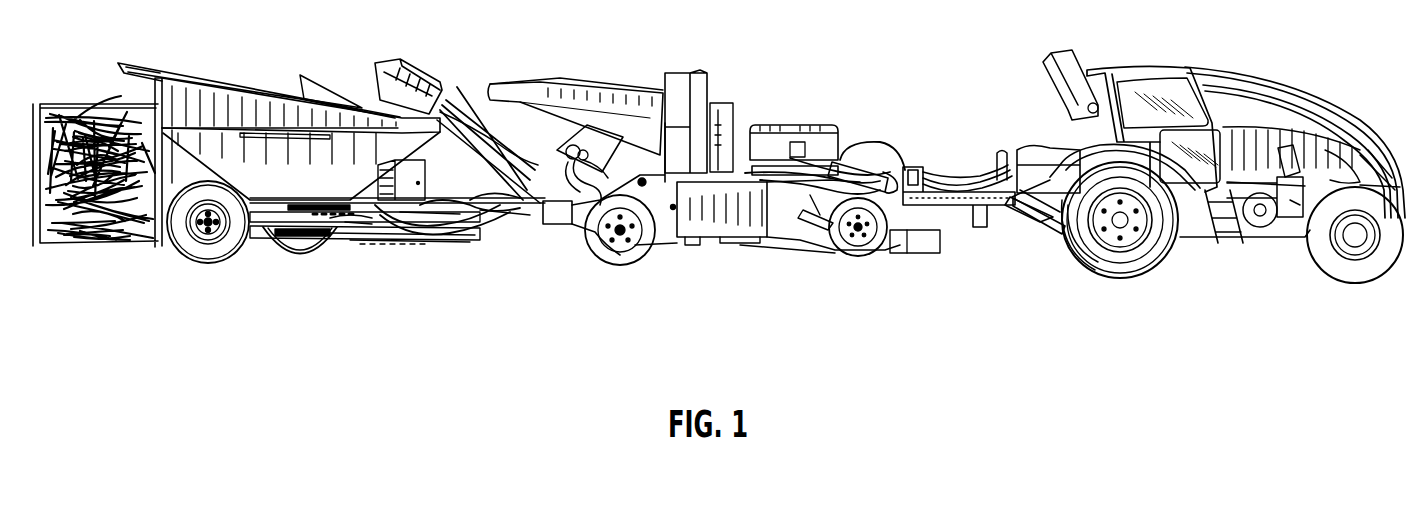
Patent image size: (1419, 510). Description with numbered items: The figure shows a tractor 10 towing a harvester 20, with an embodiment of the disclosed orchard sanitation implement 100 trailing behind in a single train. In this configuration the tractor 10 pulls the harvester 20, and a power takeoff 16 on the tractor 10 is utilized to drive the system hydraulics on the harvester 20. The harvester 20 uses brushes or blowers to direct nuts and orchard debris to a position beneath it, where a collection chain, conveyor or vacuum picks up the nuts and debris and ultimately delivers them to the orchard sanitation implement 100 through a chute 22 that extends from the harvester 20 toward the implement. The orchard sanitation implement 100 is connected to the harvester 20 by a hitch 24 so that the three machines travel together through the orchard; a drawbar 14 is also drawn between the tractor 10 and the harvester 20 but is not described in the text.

The tractor 10 is at (1212, 321).
The drawbar 14 is at (963, 214).
The power takeoff 16 is at (1017, 223).
The harvester 20 is at (737, 246).
The chute 22 is at (418, 63).
The hitch 24 is at (447, 238).
The orchard sanitation implement 100 is at (248, 273).